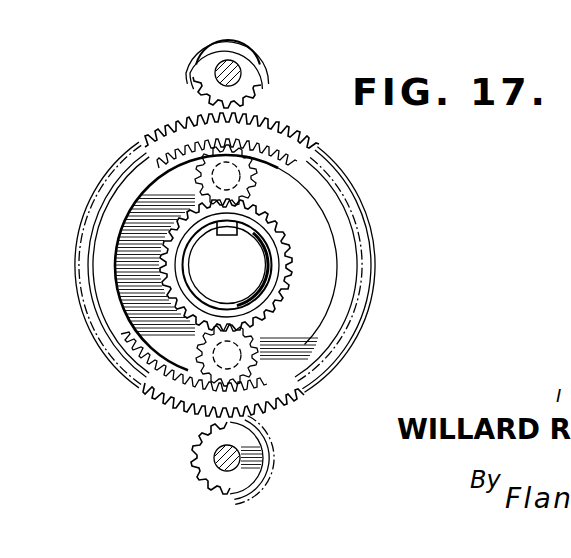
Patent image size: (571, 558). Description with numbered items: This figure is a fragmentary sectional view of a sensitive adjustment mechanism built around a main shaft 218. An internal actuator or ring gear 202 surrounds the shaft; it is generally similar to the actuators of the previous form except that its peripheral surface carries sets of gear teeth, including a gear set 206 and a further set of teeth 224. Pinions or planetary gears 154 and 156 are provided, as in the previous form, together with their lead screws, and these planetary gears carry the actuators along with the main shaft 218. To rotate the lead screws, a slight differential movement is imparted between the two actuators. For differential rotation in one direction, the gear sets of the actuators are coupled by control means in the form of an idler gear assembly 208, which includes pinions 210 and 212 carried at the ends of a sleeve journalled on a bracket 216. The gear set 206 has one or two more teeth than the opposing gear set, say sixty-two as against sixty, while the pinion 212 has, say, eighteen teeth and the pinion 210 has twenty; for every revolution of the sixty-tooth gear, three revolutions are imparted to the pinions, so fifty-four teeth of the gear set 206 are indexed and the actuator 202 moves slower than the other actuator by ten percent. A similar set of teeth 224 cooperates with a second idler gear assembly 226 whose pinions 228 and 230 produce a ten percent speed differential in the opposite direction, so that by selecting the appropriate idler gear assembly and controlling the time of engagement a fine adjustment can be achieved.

The planetary gear 154 is at (240, 188).
The planetary gear 156 is at (240, 350).
The internal actuator 202 is at (350, 236).
The gear set 206 is at (312, 133).
The idler gear assembly 208 is at (217, 58).
The pinion 210 is at (193, 97).
The pinion 212 is at (248, 83).
The bracket 216 is at (231, 68).
The main shaft 218 is at (243, 266).
The set of teeth 224 is at (172, 393).
The idler gear assembly 226 is at (211, 474).
The pinion 228 is at (200, 468).
The pinion 230 is at (264, 427).